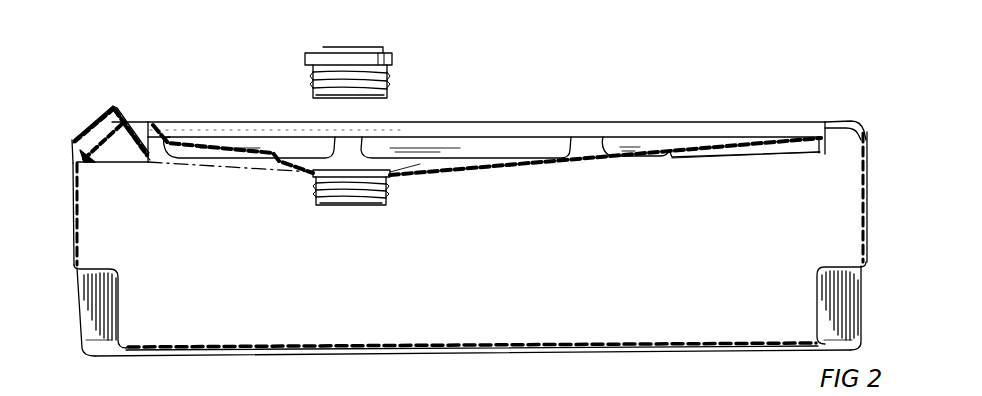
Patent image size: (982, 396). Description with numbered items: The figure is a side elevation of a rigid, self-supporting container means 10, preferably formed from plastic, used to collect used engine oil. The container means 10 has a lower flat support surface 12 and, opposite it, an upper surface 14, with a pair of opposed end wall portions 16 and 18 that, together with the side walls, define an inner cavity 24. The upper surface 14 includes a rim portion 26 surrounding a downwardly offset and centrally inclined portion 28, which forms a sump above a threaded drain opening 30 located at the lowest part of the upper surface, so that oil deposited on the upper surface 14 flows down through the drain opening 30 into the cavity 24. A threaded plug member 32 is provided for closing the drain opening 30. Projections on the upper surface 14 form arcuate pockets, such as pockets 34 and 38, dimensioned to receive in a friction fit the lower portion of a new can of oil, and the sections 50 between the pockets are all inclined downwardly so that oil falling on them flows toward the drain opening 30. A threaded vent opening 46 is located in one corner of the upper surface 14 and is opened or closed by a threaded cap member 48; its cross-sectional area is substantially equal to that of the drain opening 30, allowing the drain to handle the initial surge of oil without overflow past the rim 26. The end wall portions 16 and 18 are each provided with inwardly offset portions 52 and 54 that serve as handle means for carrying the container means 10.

The container means 10 is at (84, 103).
The lower flat support surface 12 is at (270, 355).
The upper surface 14 is at (197, 145).
The end wall portion 16 is at (72, 248).
The end wall portion 18 is at (868, 232).
The inner cavity 24 is at (648, 284).
The rim portion 26 is at (838, 122).
The downwardly offset and centrally inclined portion 28 is at (513, 170).
The threaded drain opening 30 is at (345, 207).
The threaded plug member 32 is at (404, 55).
The arcuate pocket 34 is at (290, 132).
The arcuate pocket 38 is at (517, 130).
The threaded vent opening 46 is at (133, 147).
The threaded cap member 48 is at (100, 110).
The sections between the pockets 50 is at (363, 130).
The inwardly offset portion 52 is at (97, 308).
The inwardly offset portion 54 is at (837, 300).